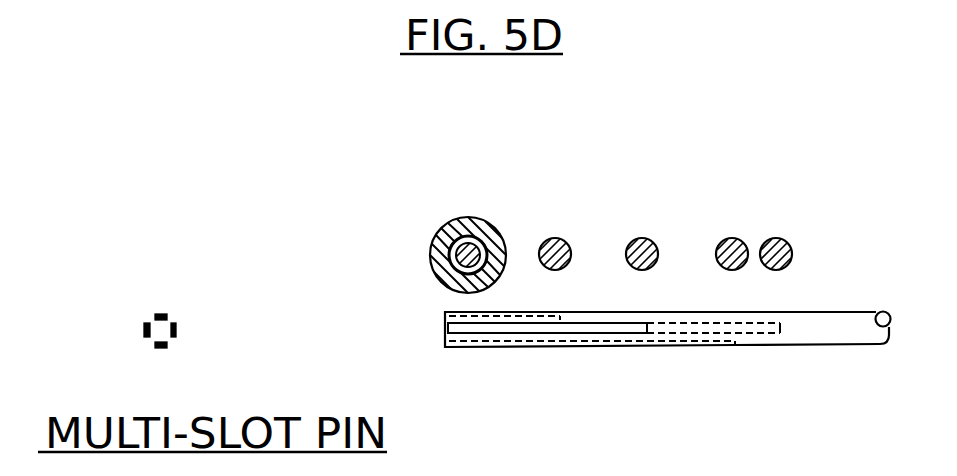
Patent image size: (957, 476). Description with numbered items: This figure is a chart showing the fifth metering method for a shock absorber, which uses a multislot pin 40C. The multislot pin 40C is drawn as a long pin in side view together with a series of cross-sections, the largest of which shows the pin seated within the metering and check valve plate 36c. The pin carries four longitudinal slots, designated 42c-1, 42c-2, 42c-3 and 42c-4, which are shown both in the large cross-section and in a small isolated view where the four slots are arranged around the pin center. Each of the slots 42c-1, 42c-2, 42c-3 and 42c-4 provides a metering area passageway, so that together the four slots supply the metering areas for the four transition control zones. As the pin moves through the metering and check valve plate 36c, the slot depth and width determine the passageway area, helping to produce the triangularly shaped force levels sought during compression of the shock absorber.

The metering and check valve plate 36c is at (450, 220).
The multislot pin 40C is at (802, 318).
The first longitudinal slot 42c-1 is at (155, 317).
The second longitudinal slot 42c-2 is at (176, 334).
The third longitudinal slot 42c-3 is at (156, 345).
The fourth longitudinal slot 42c-4 is at (144, 330).